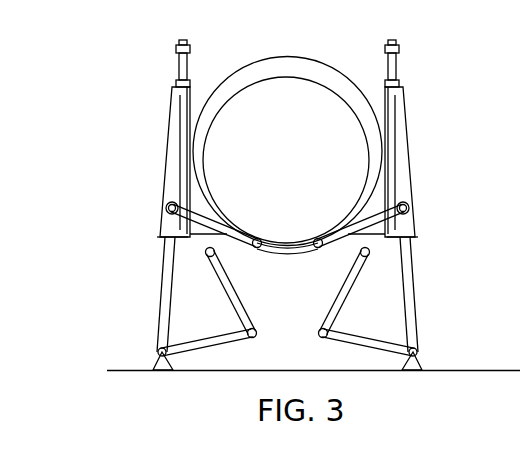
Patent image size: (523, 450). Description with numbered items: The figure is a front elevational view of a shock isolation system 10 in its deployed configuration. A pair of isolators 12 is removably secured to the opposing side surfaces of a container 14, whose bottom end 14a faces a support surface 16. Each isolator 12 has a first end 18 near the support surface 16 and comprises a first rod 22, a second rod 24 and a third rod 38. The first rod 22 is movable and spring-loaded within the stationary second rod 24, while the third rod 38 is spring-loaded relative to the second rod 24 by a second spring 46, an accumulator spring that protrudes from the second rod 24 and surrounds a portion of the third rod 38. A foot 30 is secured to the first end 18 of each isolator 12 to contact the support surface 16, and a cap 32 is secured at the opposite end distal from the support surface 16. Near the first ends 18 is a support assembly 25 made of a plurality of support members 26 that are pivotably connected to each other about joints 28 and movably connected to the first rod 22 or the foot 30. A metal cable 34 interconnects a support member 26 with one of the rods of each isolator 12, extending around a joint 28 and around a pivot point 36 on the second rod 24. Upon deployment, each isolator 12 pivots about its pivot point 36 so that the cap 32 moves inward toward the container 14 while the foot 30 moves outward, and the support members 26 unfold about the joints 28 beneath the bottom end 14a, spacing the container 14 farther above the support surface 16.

The shock isolation system 10 is at (104, 51).
The isolator 12 is at (178, 147).
The container 14 is at (302, 166).
The bottom end 14a is at (280, 245).
The support surface 16 is at (348, 371).
The first end 18 is at (445, 317).
The first rod 22 is at (165, 312).
The second rod 24 is at (178, 117).
The support assembly 25 is at (124, 323).
The support member 26 is at (228, 297).
The joint 28 is at (210, 257).
The foot 30 is at (155, 362).
The cap 32 is at (178, 43).
The metal cable 34 is at (210, 220).
The pivot point 36 is at (166, 206).
The third rod 38 is at (181, 62).
The second spring 46 is at (177, 82).